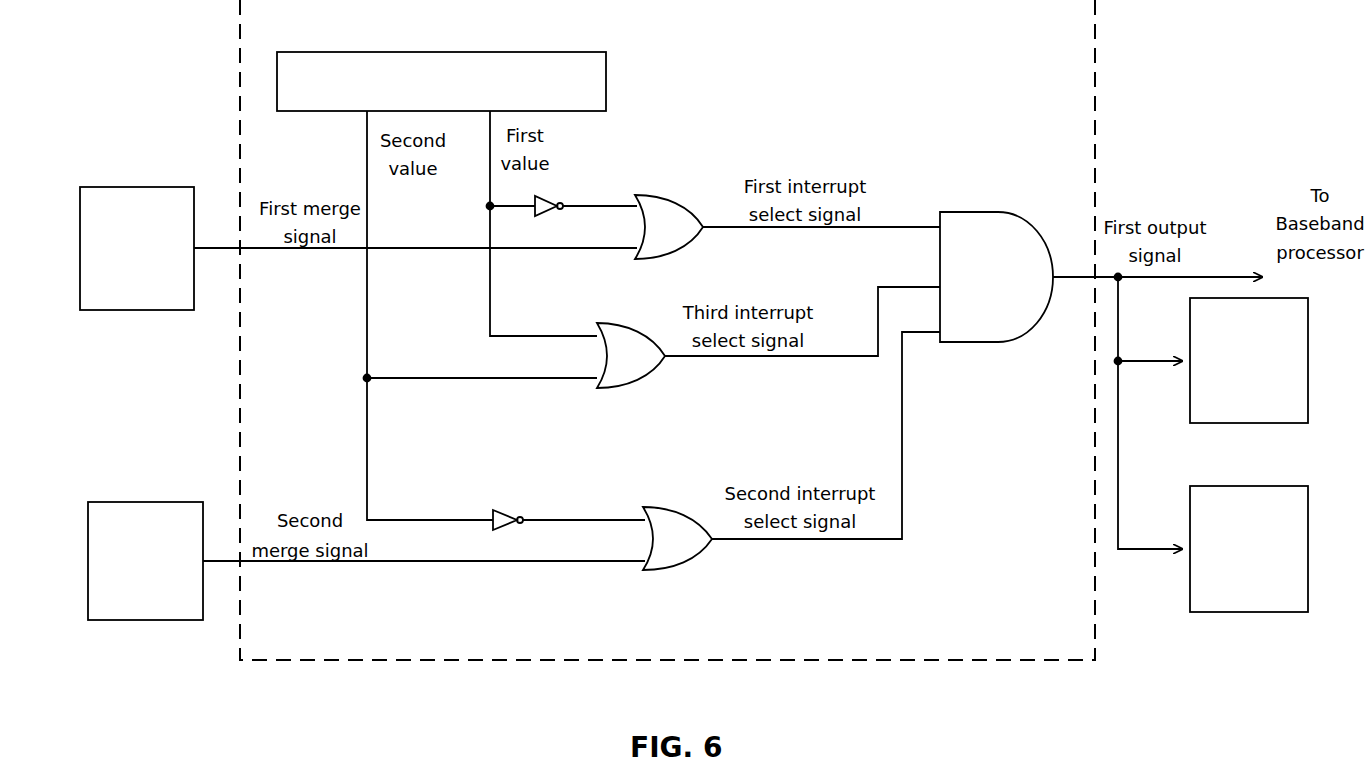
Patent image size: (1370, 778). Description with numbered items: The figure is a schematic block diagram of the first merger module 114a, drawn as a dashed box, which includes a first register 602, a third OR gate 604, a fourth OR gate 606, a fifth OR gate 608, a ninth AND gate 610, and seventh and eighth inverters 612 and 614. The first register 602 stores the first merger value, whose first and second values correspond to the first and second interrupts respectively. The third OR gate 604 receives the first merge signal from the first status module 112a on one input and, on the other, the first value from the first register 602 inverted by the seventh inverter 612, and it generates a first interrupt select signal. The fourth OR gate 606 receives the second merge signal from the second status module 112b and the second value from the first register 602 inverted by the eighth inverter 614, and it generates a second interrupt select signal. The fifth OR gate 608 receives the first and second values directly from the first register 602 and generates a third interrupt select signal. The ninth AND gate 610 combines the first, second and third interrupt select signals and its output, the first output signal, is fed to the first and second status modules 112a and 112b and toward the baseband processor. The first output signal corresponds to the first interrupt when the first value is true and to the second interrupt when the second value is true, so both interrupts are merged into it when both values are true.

The first status module 112a is at (137, 312).
The second status module 112b is at (145, 622).
The first merger module 114a is at (412, 660).
The first register 602 is at (441, 50).
The third OR gate 604 is at (635, 195).
The fourth OR gate 606 is at (641, 570).
The fifth OR gate 608 is at (600, 386).
The ninth AND gate 610 is at (998, 212).
The seventh inverter 612 is at (548, 198).
The eighth inverter 614 is at (508, 510).